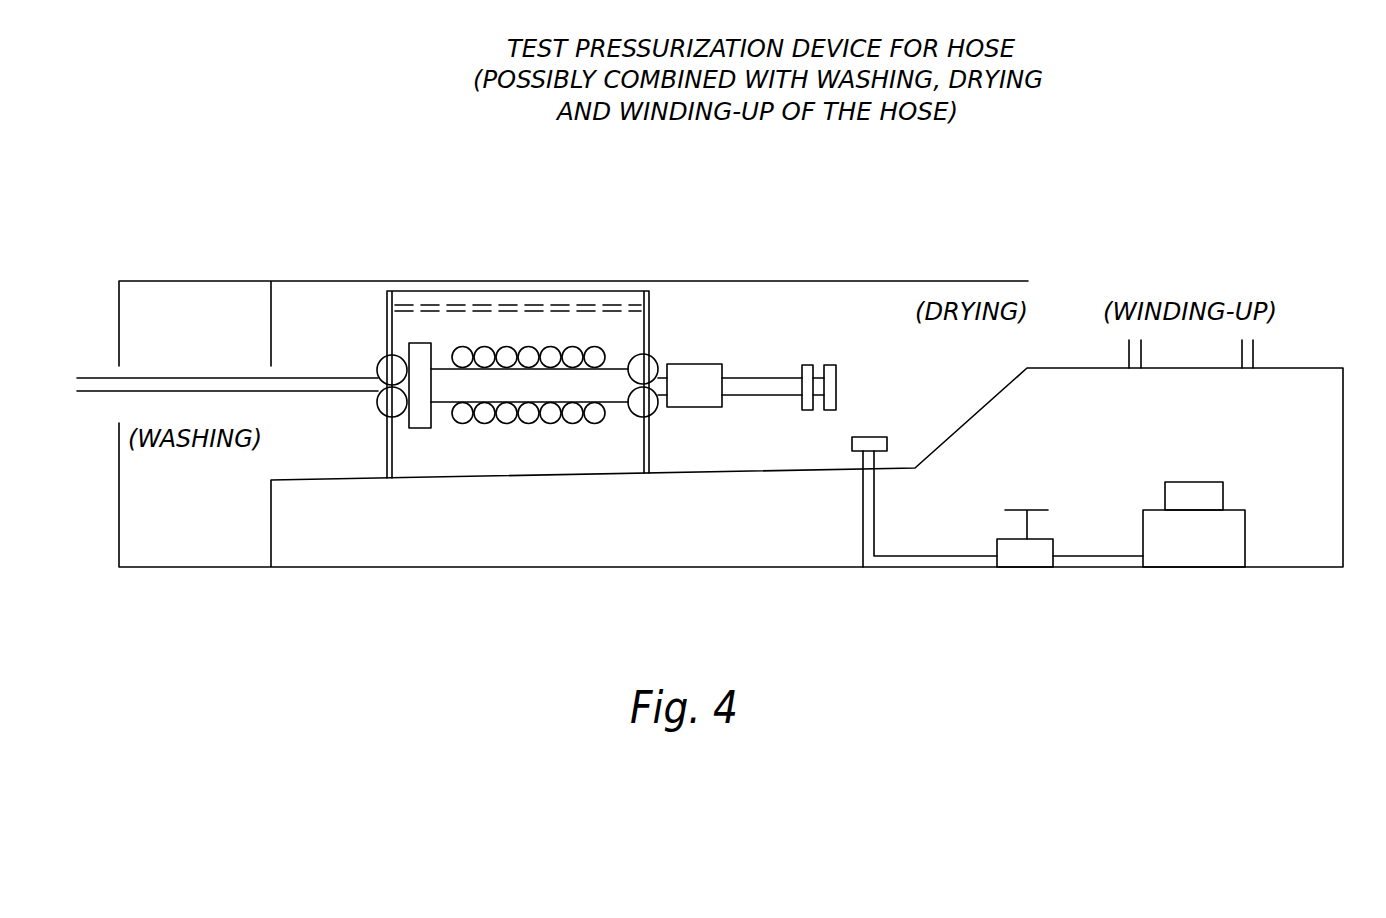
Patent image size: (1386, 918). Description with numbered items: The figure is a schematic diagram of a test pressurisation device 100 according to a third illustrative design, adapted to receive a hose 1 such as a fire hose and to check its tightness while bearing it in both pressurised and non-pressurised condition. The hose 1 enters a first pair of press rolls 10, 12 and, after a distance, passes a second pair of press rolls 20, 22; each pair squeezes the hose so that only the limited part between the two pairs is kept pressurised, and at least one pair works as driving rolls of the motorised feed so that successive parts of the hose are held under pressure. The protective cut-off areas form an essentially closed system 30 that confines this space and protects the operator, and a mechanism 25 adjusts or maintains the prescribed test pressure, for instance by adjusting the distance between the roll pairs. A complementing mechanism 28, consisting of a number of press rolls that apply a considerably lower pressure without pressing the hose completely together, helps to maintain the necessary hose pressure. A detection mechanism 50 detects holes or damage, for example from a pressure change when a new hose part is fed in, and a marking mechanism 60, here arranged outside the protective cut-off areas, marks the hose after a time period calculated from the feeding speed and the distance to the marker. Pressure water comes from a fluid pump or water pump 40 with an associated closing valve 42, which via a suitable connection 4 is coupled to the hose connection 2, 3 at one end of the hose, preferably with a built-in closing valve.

The hose 1 is at (210, 377).
The test pressurisation device 100 is at (491, 262).
The essentially closed system 30 is at (380, 293).
The mechanism for adjusting and/or maintaining the prescribed test pressure 25 is at (565, 305).
The press roll of the first pair 10 is at (381, 358).
The press roll of the first pair 12 is at (380, 415).
The press roll of the second pair 20 is at (655, 357).
The press roll of the second pair 22 is at (658, 413).
The complementing mechanism 28 is at (573, 425).
The detection mechanism 50 is at (421, 428).
The marking mechanism 60 is at (698, 364).
The hose connection 2 is at (806, 365).
The hose connection 3 is at (831, 365).
The connection 4 is at (869, 436).
The closing valve 42 is at (1028, 570).
The fluid pump/water pump 40 is at (1190, 482).